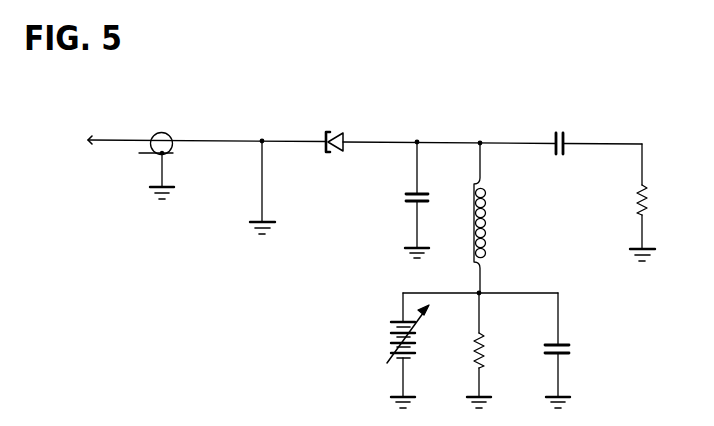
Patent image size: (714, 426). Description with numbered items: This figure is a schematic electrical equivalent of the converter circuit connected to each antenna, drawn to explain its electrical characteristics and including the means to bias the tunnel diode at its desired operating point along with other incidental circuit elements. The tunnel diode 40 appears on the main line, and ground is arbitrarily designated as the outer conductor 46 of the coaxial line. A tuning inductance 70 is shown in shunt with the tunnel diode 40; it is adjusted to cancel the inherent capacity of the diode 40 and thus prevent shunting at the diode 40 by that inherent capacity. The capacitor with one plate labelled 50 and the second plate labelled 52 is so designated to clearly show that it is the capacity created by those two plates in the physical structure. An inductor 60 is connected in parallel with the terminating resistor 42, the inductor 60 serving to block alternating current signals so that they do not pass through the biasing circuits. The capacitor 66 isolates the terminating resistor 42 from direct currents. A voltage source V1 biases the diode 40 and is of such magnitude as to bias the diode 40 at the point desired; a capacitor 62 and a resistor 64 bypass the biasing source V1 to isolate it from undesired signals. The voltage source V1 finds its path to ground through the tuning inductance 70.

The tunnel diode 40 is at (344, 138).
The terminating resistor 42 is at (648, 192).
The outer conductor 46 is at (173, 151).
The capacitor plate 50 is at (410, 192).
The capacitor plate 52 is at (410, 203).
The inductor 60 is at (487, 212).
The capacitor 62 is at (570, 350).
The resistor 64 is at (487, 344).
The capacitor 66 is at (559, 129).
The tuning inductance 70 is at (262, 183).
The voltage source V1 is at (397, 350).